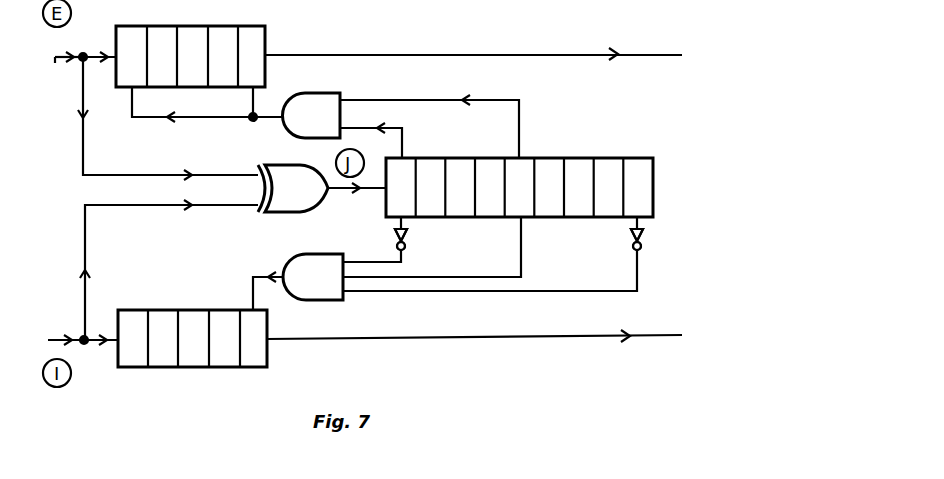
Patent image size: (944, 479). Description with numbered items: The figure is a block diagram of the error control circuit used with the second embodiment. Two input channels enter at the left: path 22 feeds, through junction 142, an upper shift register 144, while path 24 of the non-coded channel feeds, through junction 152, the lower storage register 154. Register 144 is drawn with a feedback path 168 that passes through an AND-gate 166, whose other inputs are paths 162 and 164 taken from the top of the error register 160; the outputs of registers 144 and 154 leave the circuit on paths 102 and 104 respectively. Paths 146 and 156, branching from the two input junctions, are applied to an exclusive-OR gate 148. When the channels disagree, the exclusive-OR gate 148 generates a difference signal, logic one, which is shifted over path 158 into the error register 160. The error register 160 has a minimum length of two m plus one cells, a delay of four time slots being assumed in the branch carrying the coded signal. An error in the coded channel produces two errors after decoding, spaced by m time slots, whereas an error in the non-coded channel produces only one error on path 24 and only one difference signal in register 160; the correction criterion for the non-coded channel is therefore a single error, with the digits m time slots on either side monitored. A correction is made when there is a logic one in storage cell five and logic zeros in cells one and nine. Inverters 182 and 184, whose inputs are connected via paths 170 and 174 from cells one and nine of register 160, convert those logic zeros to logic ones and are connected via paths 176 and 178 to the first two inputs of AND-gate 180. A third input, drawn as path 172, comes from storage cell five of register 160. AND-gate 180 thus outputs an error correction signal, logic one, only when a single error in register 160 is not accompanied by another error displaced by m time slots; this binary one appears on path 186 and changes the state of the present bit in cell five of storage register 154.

The input line from E terminal 22 is at (67, 71).
The path 24 is at (65, 331).
The output line 102 is at (577, 52).
The output line 104 is at (573, 337).
The input junction line 142 is at (92, 50).
The shift register 144 is at (266, 27).
The connection line to exclusive-OR gate 146 is at (83, 163).
The exclusive-OR gate 148 is at (270, 214).
The input junction line 152 is at (95, 350).
The storage register 154 is at (257, 368).
The connection line to exclusive-OR gate 156 is at (85, 228).
The exclusive-OR output line 158 is at (340, 190).
The error register 160 is at (585, 156).
The connection line 162 is at (402, 135).
The connection line 164 is at (519, 110).
The AND gate 166 is at (317, 93).
The feedback line 168 is at (253, 121).
The path 170 is at (404, 222).
The output line of shift register 172 is at (521, 222).
The path 174 is at (640, 225).
The path 176 is at (401, 256).
The path 178 is at (640, 260).
The AND-gate 180 is at (343, 300).
The inverter 182 is at (394, 244).
The inverter 184 is at (631, 246).
The path 186 is at (253, 300).